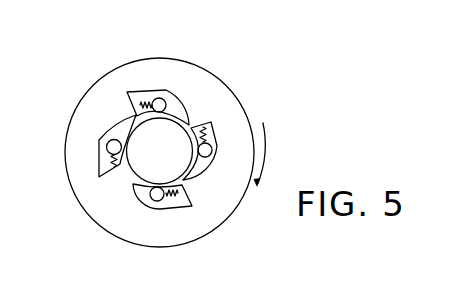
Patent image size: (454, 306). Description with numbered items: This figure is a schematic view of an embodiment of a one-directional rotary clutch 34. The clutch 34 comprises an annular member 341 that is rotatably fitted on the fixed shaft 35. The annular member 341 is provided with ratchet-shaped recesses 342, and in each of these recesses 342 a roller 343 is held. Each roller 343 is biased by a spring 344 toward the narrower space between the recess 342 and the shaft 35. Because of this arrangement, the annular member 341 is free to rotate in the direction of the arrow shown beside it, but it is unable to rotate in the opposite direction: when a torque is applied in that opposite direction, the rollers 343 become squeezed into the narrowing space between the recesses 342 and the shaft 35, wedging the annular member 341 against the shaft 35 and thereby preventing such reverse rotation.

The clutch 34 is at (242, 86).
The annular member 341 is at (223, 199).
The fixed shaft 35 is at (145, 135).
The ratchet-shaped recesses 342 is at (139, 191).
The rollers 343 is at (152, 202).
The springs 344 is at (174, 207).